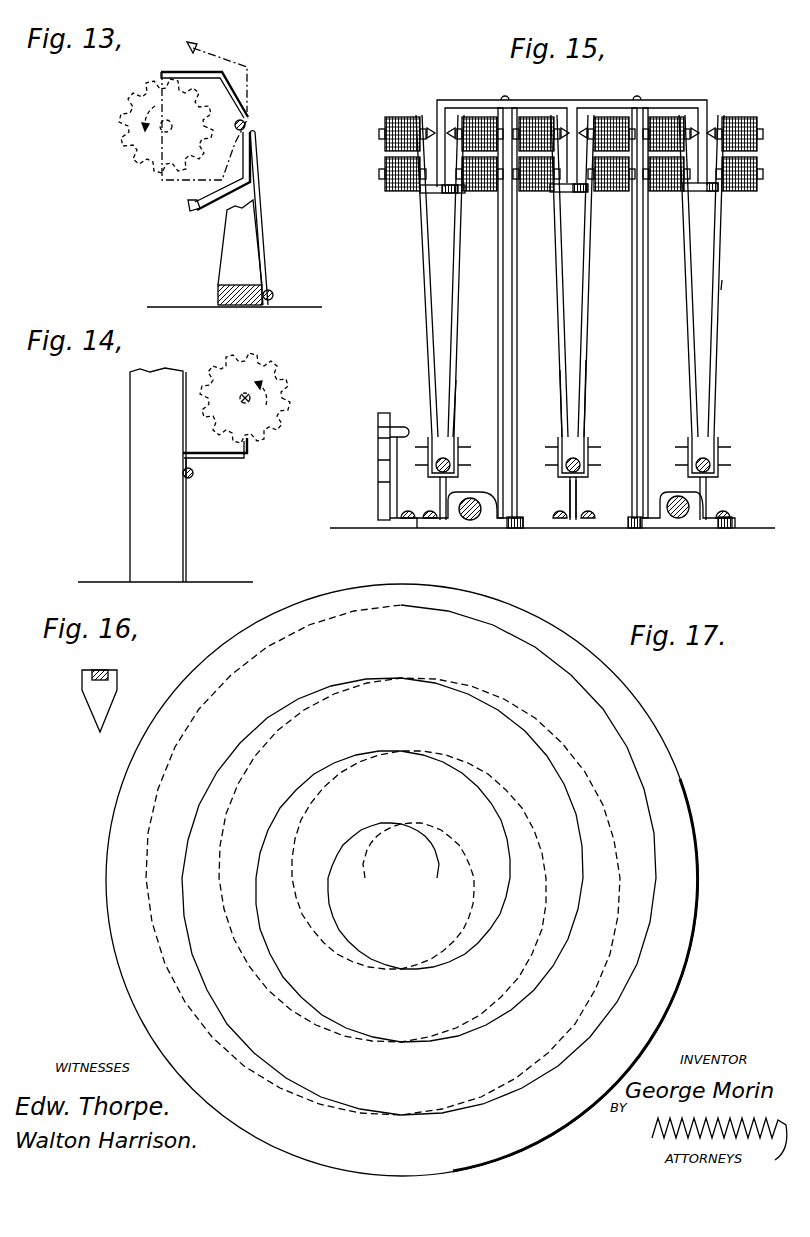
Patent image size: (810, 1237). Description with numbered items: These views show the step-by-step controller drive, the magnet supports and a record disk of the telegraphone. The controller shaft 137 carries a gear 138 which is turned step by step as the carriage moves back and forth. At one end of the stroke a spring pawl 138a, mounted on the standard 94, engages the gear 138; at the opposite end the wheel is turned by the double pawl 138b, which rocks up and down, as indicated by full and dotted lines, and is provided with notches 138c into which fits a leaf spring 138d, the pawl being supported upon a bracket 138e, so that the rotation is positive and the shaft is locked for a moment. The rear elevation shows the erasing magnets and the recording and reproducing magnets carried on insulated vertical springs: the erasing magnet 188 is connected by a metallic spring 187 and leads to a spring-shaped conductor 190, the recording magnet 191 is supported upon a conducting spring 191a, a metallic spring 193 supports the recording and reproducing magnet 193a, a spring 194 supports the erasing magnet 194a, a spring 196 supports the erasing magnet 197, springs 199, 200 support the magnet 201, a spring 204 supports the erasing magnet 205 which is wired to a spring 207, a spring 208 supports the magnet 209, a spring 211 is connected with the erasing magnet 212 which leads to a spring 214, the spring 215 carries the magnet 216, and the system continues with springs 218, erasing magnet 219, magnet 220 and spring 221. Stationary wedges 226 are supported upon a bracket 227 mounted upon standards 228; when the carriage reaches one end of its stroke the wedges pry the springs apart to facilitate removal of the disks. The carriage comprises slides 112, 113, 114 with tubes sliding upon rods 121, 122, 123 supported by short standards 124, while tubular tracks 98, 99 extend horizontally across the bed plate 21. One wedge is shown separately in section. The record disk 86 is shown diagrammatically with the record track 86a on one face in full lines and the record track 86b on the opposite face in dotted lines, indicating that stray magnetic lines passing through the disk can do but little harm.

In FIG. 13, the gear 138 is at (132, 131).
In FIG. 14, the gear 138 is at (267, 364).
In FIG. 15, the gear 138 is at (380, 425).
In FIG. 14, the spring pawl 138a is at (243, 457).
In FIG. 13, the double pawl 138b is at (208, 72).
In FIG. 13, the notches 138c is at (255, 120).
In FIG. 13, the leaf spring 138d is at (263, 183).
In FIG. 13, the bracket 138e is at (240, 252).
In FIG. 15, the bracket 138e is at (392, 498).
In FIG. 14, the controller shaft 137 is at (242, 390).
In FIG. 14, the standard 94 is at (158, 475).
In FIG. 15, the recording and reproducing magnet 220 is at (397, 117).
In FIG. 15, the erasing magnet 219 is at (402, 192).
In FIG. 15, the recording and reproducing magnet 216 is at (477, 117).
In FIG. 15, the erasing magnet 212 is at (485, 192).
In FIG. 15, the recording and reproducing magnet 209 is at (532, 117).
In FIG. 15, the erasing magnet 205 is at (535, 192).
In FIG. 15, the recording and reproducing magnet 201 is at (613, 117).
In FIG. 15, the erasing magnet 197 is at (613, 192).
In FIG. 15, the recording and reproducing magnet 193a is at (665, 117).
In FIG. 15, the erasing magnet 194a is at (658, 192).
In FIG. 15, the recording magnet 191 is at (757, 118).
In FIG. 15, the erasing magnet 188 is at (757, 183).
In FIG. 15, the bracket 227 is at (565, 93).
In FIG. 15, the stationary wedges 226 is at (438, 193).
In FIG. 16, the stationary wedges 226 is at (92, 692).
In FIG. 15, the standards 228 is at (502, 308).
In FIG. 15, the spring 221 is at (425, 313).
In FIG. 15, the springs 218 is at (428, 338).
In FIG. 15, the spring 215 is at (462, 372).
In FIG. 15, the spring 211 is at (466, 350).
In FIG. 15, the spring 214 is at (455, 397).
In FIG. 15, the spring 207 is at (559, 330).
In FIG. 15, the spring 208 is at (565, 343).
In FIG. 15, the spring 204 is at (560, 374).
In FIG. 15, the spring 196 is at (592, 318).
In FIG. 15, the spring 200 is at (590, 345).
In FIG. 15, the spring 199 is at (592, 364).
In FIG. 15, the metallic spring 193 is at (686, 338).
In FIG. 15, the spring 194 is at (688, 363).
In FIG. 15, the conductor 190 is at (722, 238).
In FIG. 15, the spring 191a is at (727, 260).
In FIG. 15, the metallic spring 187 is at (724, 285).
In FIG. 15, the slide 114 is at (447, 452).
In FIG. 15, the slide 113 is at (587, 437).
In FIG. 15, the slide 112 is at (718, 437).
In FIG. 15, the rod 123 is at (451, 465).
In FIG. 15, the rod 122 is at (581, 465).
In FIG. 15, the rod 121 is at (711, 465).
In FIG. 15, the short standards 124 is at (570, 497).
In FIG. 15, the tubular track 99 is at (470, 520).
In FIG. 15, the tubular track 98 is at (678, 518).
In FIG. 15, the bed plate 21 is at (745, 528).
In FIG. 17, the record disk 86 is at (684, 790).
In FIG. 17, the record track 86a is at (623, 739).
In FIG. 17, the record track 86b is at (623, 888).